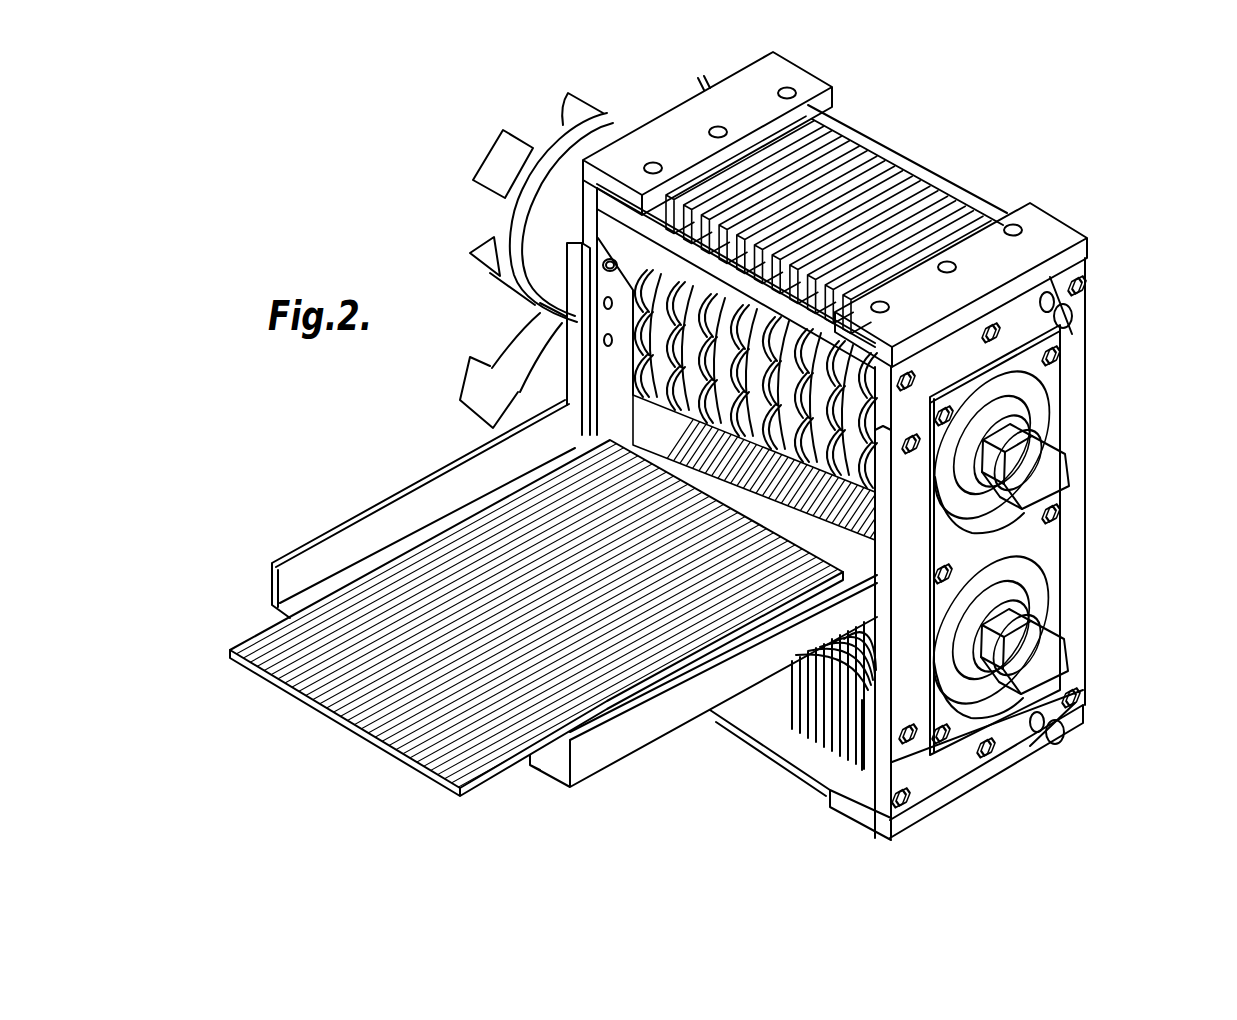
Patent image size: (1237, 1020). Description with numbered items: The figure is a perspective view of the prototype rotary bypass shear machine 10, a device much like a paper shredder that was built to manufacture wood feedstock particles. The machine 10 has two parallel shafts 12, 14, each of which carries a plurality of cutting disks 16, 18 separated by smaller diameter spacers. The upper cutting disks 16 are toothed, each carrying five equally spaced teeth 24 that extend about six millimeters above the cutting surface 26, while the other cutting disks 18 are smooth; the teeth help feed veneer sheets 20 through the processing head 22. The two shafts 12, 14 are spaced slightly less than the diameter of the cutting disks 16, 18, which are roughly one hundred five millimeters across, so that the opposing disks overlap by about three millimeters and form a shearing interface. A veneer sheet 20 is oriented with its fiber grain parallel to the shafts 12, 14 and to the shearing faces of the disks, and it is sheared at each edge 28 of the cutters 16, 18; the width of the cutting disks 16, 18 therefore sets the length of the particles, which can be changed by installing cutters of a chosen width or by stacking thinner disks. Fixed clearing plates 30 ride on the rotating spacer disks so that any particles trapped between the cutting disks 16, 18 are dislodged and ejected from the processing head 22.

The rotary bypass shear machine 10 is at (410, 138).
The shaft 12 is at (1050, 477).
The shaft 14 is at (1047, 655).
The cutting disk 16 is at (862, 412).
The cutting disk 18 is at (945, 698).
The veneer sheet 20 is at (413, 578).
The processing head 22 is at (718, 78).
The tooth 24 is at (850, 483).
The cutting surface 26 is at (853, 472).
The edge 28 is at (862, 642).
The clearing plate 30 is at (838, 128).